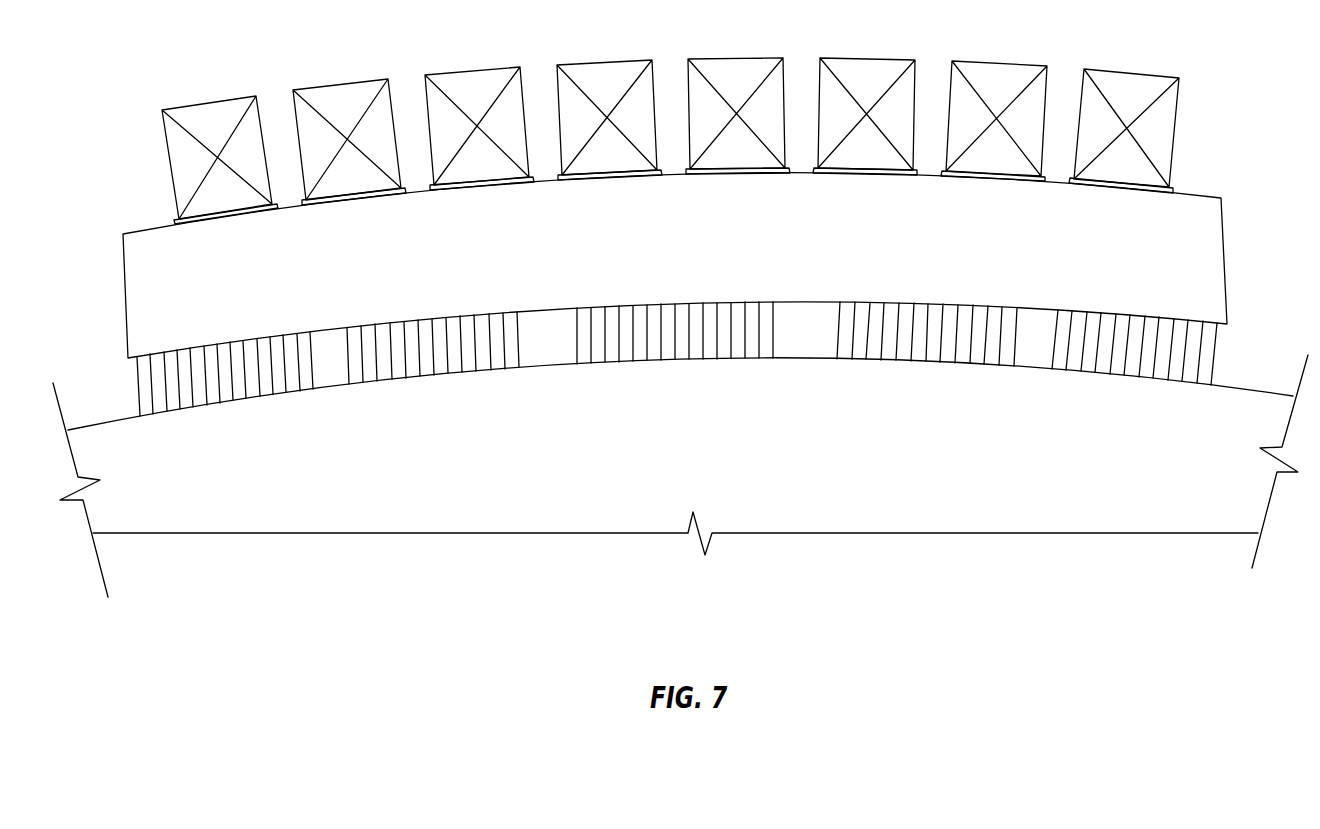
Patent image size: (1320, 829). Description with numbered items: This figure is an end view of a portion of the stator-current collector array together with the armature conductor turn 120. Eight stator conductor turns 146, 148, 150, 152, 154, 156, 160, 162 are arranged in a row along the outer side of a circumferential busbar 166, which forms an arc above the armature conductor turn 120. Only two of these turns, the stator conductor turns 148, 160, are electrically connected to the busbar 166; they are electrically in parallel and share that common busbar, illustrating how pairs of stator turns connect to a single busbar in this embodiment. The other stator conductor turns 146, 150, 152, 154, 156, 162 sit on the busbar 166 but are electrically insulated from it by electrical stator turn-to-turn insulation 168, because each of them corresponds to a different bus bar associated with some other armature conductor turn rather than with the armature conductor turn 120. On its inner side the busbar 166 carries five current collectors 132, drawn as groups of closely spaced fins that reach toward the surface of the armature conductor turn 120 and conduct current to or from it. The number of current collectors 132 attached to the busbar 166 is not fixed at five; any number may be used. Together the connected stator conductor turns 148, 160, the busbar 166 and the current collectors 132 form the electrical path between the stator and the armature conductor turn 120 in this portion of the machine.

The armature conductor turn 120 is at (140, 413).
The current collector 132 is at (230, 388).
The stator conductor turn 146 is at (1140, 81).
The stator conductor turn 148 is at (1005, 71).
The stator conductor turn 150 is at (880, 60).
The stator conductor turn 152 is at (748, 61).
The stator conductor turn 154 is at (592, 68).
The stator conductor turn 156 is at (467, 74).
The stator conductor turn 160 is at (342, 94).
The stator conductor turn 162 is at (204, 110).
The circumferential busbar 166 is at (136, 302).
The electrical stator turn-to-turn insulation 168 is at (178, 217).